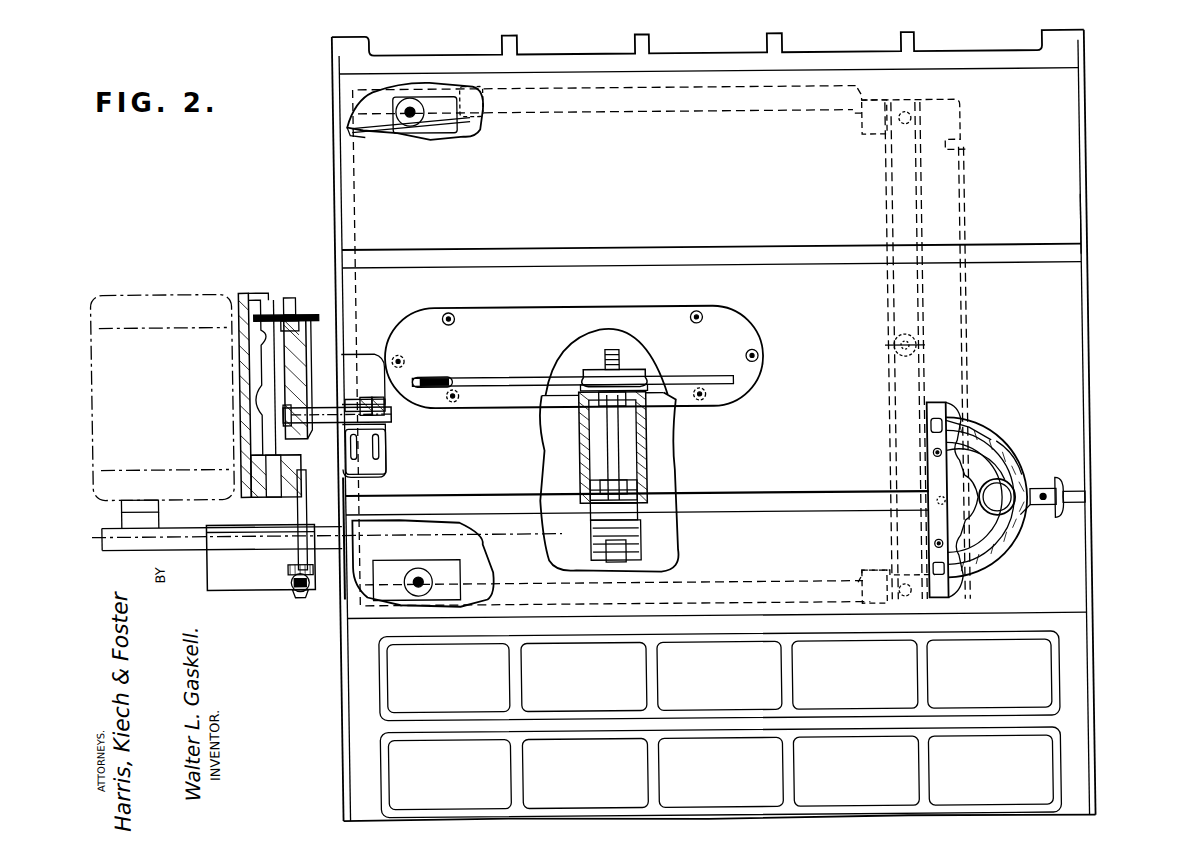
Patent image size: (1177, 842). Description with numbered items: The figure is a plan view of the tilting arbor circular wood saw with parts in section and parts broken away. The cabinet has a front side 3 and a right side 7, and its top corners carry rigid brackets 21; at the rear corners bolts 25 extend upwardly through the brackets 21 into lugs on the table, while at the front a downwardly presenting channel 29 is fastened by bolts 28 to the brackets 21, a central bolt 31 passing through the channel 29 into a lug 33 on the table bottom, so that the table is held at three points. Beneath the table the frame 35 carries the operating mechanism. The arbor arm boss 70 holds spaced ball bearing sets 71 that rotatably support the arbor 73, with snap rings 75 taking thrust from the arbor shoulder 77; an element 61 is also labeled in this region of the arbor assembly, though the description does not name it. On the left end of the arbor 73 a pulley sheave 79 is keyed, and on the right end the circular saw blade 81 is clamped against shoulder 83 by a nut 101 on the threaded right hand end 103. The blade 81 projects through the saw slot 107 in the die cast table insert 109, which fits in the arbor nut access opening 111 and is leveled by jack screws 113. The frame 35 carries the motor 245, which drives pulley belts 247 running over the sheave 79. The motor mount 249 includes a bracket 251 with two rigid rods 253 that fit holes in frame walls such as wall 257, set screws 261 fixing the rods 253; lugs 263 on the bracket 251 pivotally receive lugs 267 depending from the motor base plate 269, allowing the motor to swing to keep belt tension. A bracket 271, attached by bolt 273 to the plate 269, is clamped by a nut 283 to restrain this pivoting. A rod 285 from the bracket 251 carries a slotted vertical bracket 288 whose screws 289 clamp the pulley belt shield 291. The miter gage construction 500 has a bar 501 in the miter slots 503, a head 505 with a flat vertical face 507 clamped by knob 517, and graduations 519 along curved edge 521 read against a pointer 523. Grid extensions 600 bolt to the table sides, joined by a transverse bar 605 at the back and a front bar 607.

The front side 3 is at (962, 325).
The right side 7 is at (596, 87).
The rigid brackets 21 is at (460, 129).
The bolts 25 is at (412, 126).
The bolts 28 is at (945, 103).
The channel 29 is at (930, 258).
The bolt 31 is at (893, 344).
The lug 33 is at (893, 356).
The frame 35 is at (385, 460).
The solenoid coil 61 is at (640, 465).
The boss 70 is at (665, 450).
The ball bearing sets 71 is at (650, 403).
The arbor 73 is at (640, 438).
The snap rings 75 is at (640, 475).
The arbor shoulder 77 is at (592, 500).
The pulley sheave 79 is at (645, 552).
The circular saw blade 81 is at (505, 378).
The shoulder 83 is at (590, 380).
The nut 101 is at (625, 368).
The threaded right hand end 103 is at (612, 348).
The saw slot 107 is at (465, 378).
The table insert 109 is at (495, 318).
The arbor nut access opening 111 is at (668, 312).
The leveling or jack screws 113 is at (700, 312).
The motor 245 is at (128, 300).
The pulley belts 247 is at (190, 525).
The motor mount 249 is at (254, 280).
The bracket 251 is at (300, 370).
The rigid rods 253 is at (360, 422).
The wall 257 is at (365, 428).
The set screws 261 is at (358, 395).
The lugs 263 is at (252, 466).
The lugs 267 is at (296, 495).
The motor base plate 269 is at (242, 297).
The bracket 271 is at (372, 131).
The bolt 273 is at (262, 352).
The nut 283 is at (312, 290).
The rod 285 is at (344, 510).
The slotted vertical bracket 288 is at (285, 580).
The screws 289 is at (298, 600).
The pulley belt shield 291 is at (222, 590).
The miter gage construction 500 is at (995, 567).
The bar 501 is at (838, 497).
The miter slots 503 is at (816, 250).
The head 505 is at (955, 410).
The flat vertical face 507 is at (928, 420).
The knob 517 is at (1015, 480).
The graduations 519 is at (1005, 445).
The edge 521 is at (1007, 458).
The pointer 523 is at (1025, 512).
The grids 600 is at (1068, 50).
The transverse bar 605 is at (338, 206).
The front bar 607 is at (1086, 230).